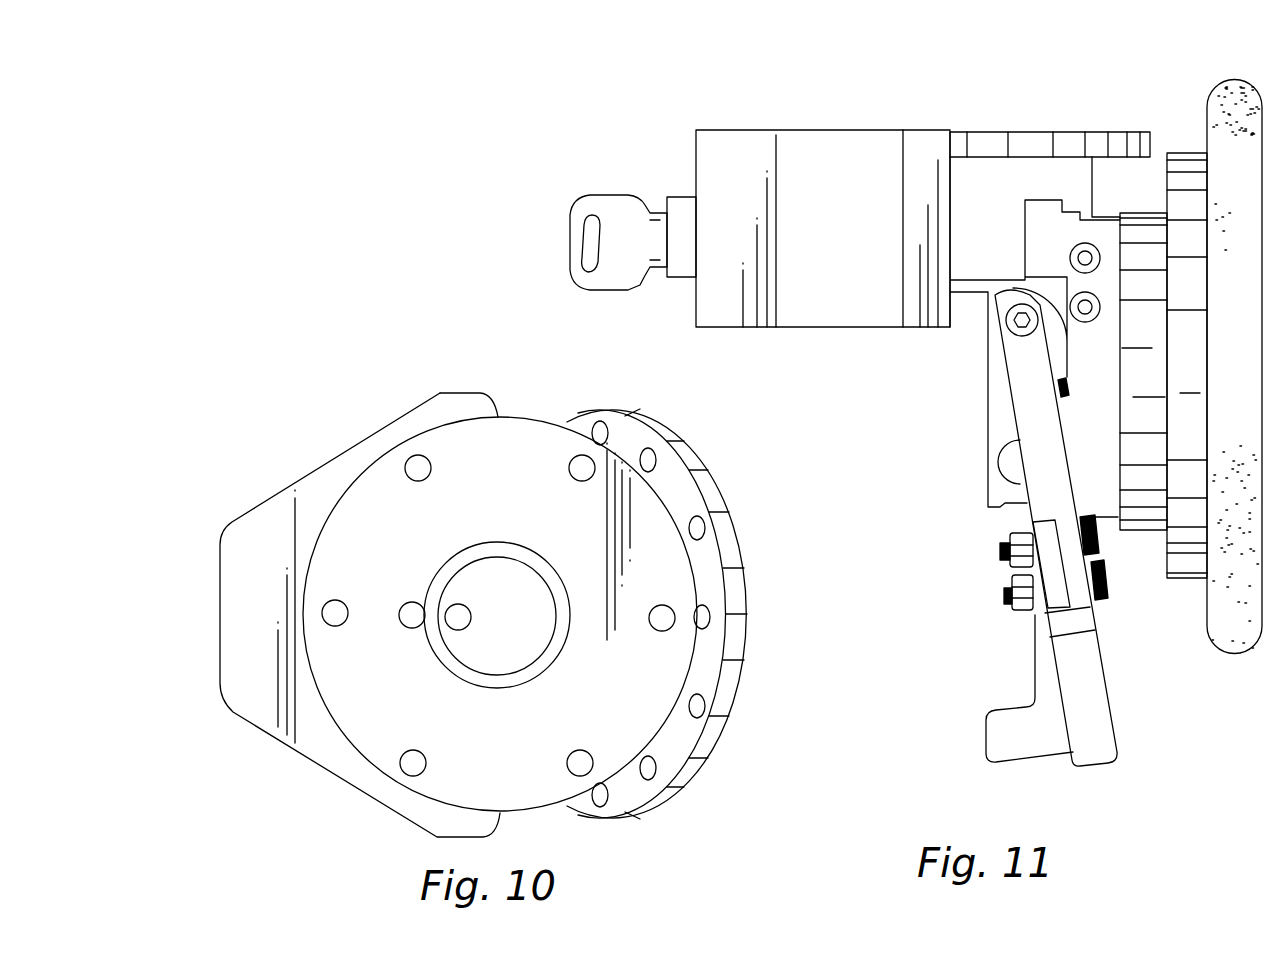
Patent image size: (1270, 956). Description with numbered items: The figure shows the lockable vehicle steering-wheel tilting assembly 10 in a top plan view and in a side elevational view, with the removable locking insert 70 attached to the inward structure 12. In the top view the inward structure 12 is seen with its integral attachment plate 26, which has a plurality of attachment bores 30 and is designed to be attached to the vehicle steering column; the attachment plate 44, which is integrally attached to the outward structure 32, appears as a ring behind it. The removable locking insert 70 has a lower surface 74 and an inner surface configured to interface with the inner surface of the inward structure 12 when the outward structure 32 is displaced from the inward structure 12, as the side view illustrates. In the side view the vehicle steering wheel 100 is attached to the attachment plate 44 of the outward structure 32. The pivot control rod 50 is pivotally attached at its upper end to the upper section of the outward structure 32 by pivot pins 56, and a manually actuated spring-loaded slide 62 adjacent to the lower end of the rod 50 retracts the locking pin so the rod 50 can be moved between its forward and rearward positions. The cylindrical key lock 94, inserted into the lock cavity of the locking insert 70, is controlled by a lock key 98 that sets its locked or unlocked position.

In FIG. 10, the lockable vehicle steering-wheel tilting assembly 10 is at (748, 435).
In FIG. 11, the lockable vehicle steering-wheel tilting assembly 10 is at (658, 123).
In FIG. 11, the inward structure 12 is at (990, 185).
In FIG. 10, the attachment plate 26 is at (543, 432).
In FIG. 11, the attachment plate 26 is at (1047, 142).
In FIG. 10, the attachment bores 30 is at (662, 618).
In FIG. 11, the outward structure 32 is at (1130, 517).
In FIG. 10, the attachment plate 44 is at (713, 492).
In FIG. 11, the attachment plate 44 is at (1188, 162).
In FIG. 11, the pivot control rod 50 is at (1087, 685).
In FIG. 11, the pivot pins 56 is at (1010, 320).
In FIG. 11, the spring-loaded slide 62 is at (1017, 732).
In FIG. 10, the removable locking insert 70 is at (423, 418).
In FIG. 11, the removable locking insert 70 is at (840, 150).
In FIG. 10, the lower surface 74 is at (317, 470).
In FIG. 11, the cylindrical key lock 94 is at (682, 268).
In FIG. 11, the lock key 98 is at (590, 278).
In FIG. 11, the vehicle steering wheel 100 is at (1240, 85).